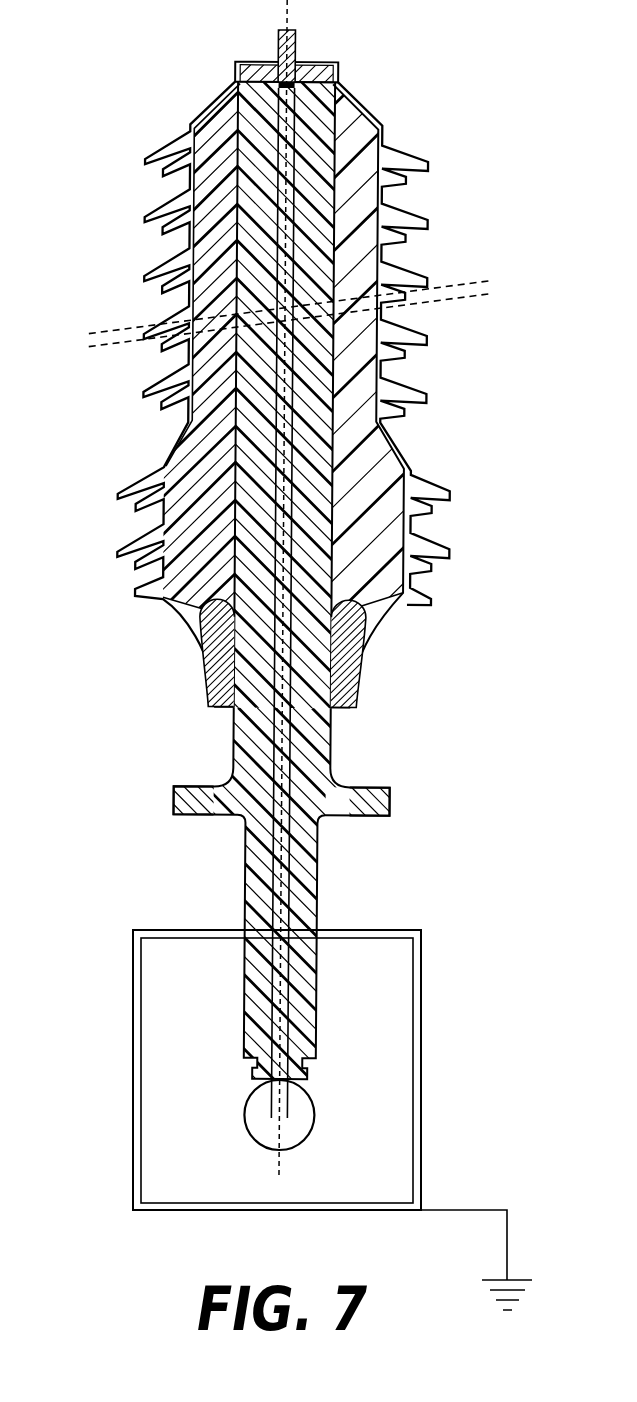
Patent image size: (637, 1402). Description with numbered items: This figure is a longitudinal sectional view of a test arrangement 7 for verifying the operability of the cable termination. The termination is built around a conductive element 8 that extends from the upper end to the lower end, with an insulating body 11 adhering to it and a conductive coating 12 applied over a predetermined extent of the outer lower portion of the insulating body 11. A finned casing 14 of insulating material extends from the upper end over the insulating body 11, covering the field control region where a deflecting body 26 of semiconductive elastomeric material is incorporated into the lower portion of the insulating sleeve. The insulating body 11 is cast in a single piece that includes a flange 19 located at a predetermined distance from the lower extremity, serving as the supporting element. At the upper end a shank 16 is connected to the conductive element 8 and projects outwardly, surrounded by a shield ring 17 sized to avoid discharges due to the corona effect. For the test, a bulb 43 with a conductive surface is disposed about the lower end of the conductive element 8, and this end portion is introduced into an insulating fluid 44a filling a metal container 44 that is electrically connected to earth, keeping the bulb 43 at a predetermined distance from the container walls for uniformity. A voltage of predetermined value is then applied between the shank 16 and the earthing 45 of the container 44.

The bushing assembly 7 is at (472, 452).
The conductive element 8 is at (270, 480).
The insulating body 11 is at (248, 262).
The conductive coating 12 is at (230, 753).
The finned casing 14 is at (122, 488).
The shank 16 is at (298, 40).
The shield ring 17 is at (263, 72).
The flange 19 is at (347, 792).
The deflecting body 26 is at (210, 633).
The bulb 43 is at (300, 1087).
The metal container 44 is at (423, 958).
The insulating fluid 44a is at (160, 976).
The earthing 45 is at (473, 1208).